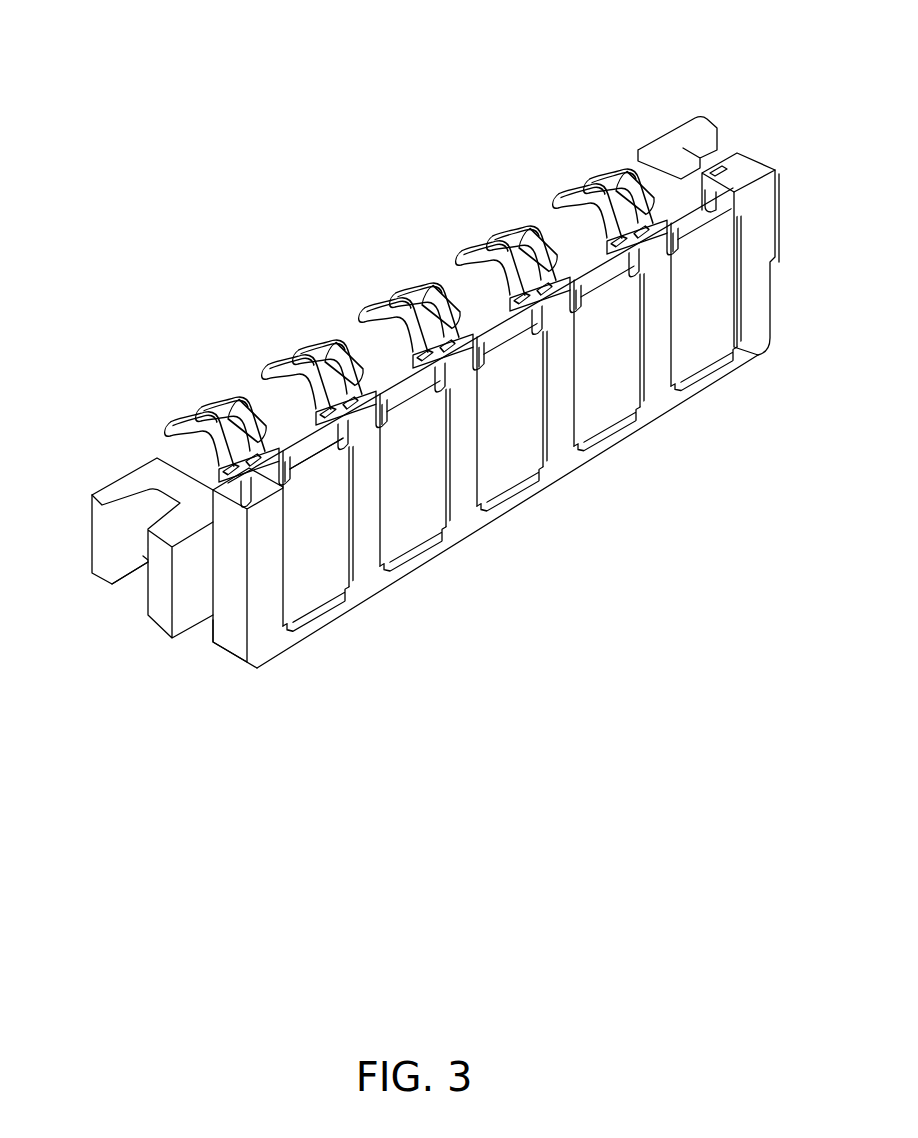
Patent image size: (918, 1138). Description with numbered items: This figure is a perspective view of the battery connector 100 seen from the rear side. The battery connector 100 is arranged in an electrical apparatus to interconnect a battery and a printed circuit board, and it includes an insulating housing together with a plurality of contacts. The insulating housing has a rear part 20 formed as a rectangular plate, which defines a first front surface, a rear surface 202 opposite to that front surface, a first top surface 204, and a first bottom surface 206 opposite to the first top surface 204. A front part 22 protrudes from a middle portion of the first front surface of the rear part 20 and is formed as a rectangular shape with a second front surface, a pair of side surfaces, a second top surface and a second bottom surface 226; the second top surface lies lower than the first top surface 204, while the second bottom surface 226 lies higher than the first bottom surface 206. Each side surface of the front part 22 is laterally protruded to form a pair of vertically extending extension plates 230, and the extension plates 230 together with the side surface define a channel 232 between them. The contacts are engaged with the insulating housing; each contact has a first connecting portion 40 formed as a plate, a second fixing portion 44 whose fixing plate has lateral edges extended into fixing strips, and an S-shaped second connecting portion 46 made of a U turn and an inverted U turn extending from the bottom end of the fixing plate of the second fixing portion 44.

The battery connector 100 is at (63, 70).
The rear part 20 is at (700, 397).
The front part 22 is at (673, 127).
The rear surface 202 is at (457, 493).
The first top surface 204 is at (731, 168).
The first bottom surface 206 is at (283, 655).
The second bottom surface 226 is at (203, 628).
The extension plates 230 is at (102, 538).
The channel 232 is at (143, 558).
The first connecting portion 40 is at (313, 556).
The second fixing portion 44 is at (248, 392).
The second connecting portion 46 is at (300, 455).